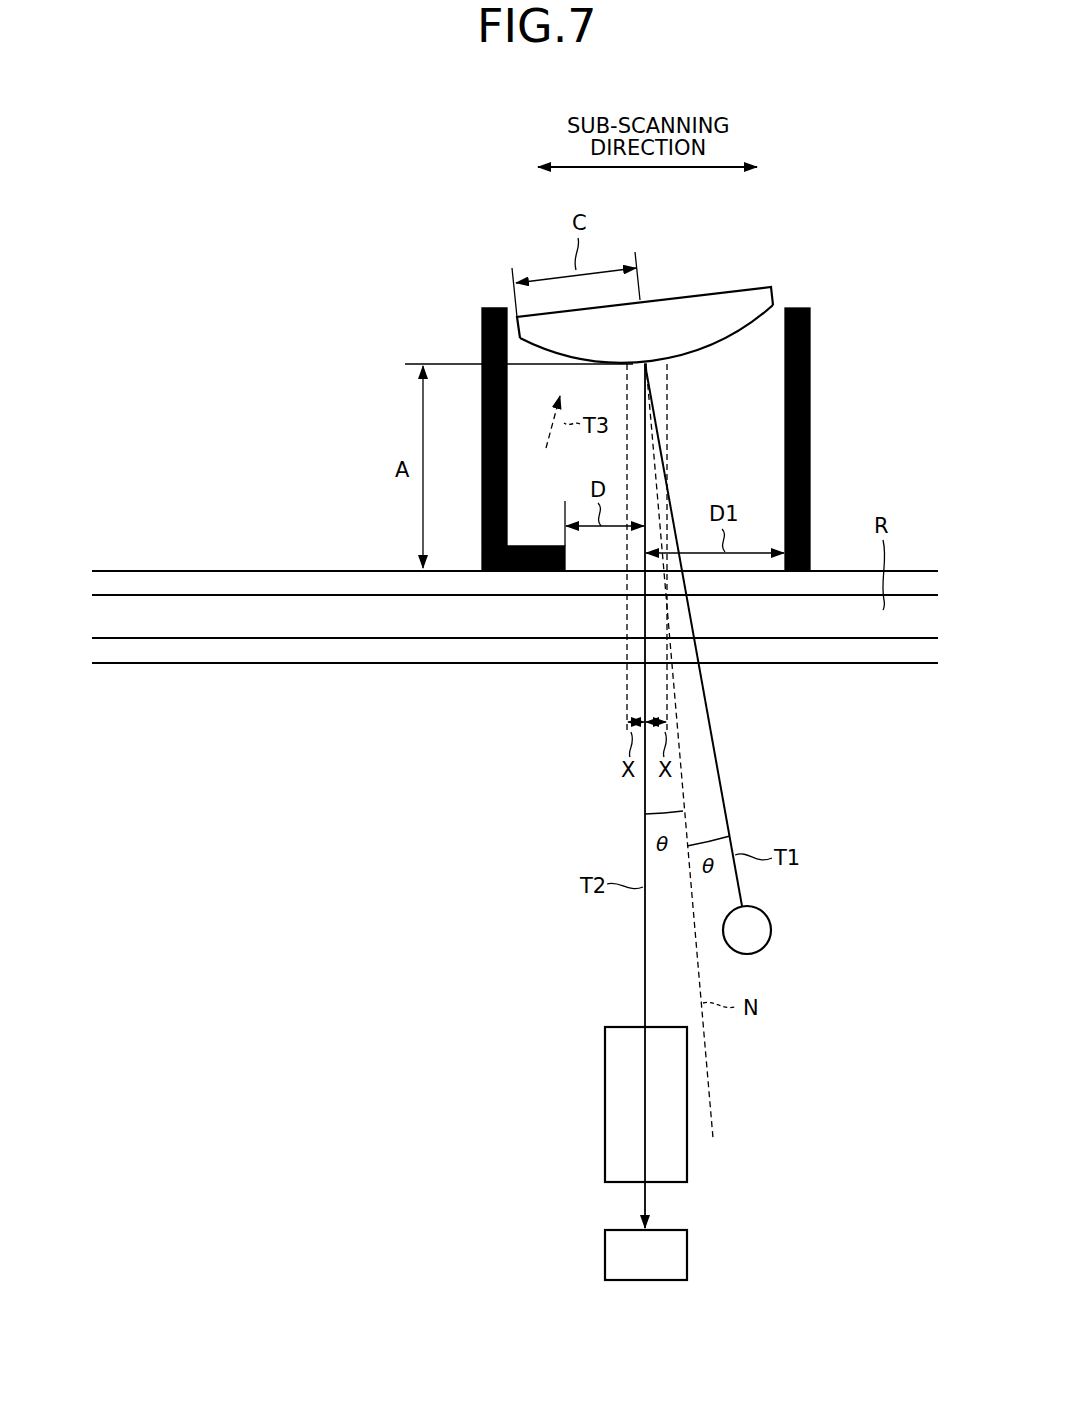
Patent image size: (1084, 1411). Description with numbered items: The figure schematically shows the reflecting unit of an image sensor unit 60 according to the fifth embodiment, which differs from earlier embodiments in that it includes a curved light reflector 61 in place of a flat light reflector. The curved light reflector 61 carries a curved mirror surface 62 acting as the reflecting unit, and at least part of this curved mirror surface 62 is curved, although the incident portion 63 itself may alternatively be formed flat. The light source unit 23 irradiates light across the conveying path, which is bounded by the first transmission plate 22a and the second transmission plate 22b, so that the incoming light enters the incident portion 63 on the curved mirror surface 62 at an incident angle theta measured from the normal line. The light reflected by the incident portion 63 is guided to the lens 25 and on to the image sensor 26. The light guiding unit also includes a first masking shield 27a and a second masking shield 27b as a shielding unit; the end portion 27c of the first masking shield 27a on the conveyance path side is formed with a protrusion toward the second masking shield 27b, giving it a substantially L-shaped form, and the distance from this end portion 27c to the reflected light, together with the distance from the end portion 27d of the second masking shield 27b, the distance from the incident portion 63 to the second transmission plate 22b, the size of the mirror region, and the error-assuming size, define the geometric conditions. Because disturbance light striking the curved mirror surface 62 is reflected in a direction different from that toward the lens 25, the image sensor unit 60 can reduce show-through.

The image sensor unit 60 is at (834, 124).
The curved light reflector 61 is at (773, 300).
The curved mirror surface 62 is at (738, 336).
The incident portion 63 is at (646, 365).
The first masking shield 27a is at (481, 318).
The second masking shield 27b is at (810, 318).
The end portion 27c is at (519, 571).
The end portion 27d is at (798, 571).
The first transmission plate 22a is at (257, 653).
The second transmission plate 22b is at (251, 581).
The light source unit 23 is at (771, 930).
The lens 25 is at (604, 1107).
The image sensor 26 is at (604, 1257).